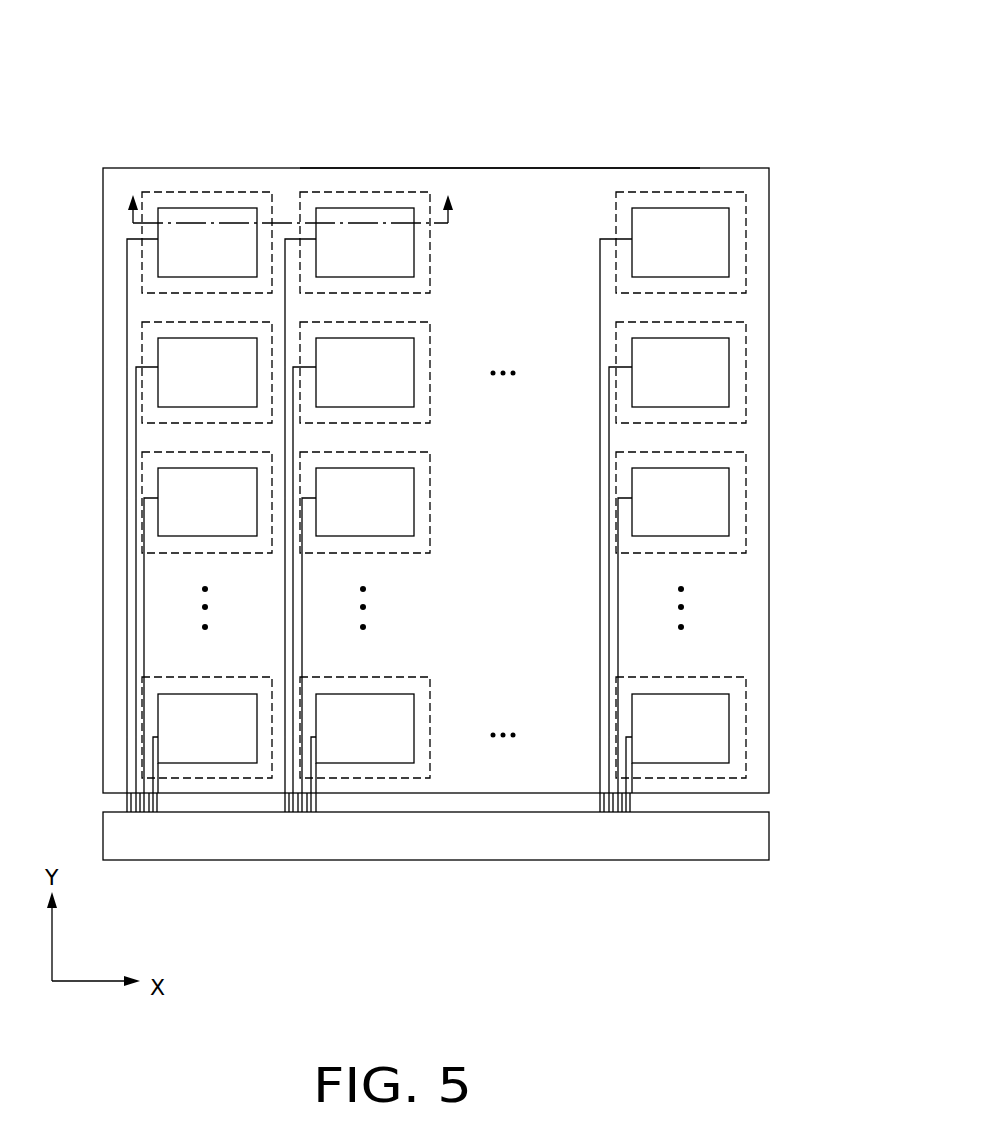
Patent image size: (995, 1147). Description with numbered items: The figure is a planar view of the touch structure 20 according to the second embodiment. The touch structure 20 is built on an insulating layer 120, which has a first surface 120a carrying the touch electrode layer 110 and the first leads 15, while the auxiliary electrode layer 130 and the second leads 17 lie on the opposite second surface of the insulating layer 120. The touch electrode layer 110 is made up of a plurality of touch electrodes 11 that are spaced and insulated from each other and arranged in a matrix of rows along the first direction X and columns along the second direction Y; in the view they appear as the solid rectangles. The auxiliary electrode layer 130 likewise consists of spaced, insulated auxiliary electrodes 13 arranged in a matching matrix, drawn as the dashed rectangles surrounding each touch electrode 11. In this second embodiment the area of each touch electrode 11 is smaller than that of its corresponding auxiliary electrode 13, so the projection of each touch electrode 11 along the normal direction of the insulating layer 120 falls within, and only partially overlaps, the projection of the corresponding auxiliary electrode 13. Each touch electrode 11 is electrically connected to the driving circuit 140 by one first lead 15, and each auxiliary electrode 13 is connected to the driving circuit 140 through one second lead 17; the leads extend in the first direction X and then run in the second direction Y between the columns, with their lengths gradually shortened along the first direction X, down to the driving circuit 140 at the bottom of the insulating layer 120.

The touch structure 20 is at (450, 56).
The insulating layer 120 is at (676, 167).
The first surface 120a is at (477, 185).
The auxiliary electrode layer 130 is at (752, 197).
The touch electrode layer 110 is at (718, 248).
The auxiliary electrode 13 is at (747, 333).
The touch electrode 11 is at (705, 370).
The first lead 15 is at (618, 642).
The second lead 17 is at (634, 806).
The driving circuit 140 is at (751, 842).